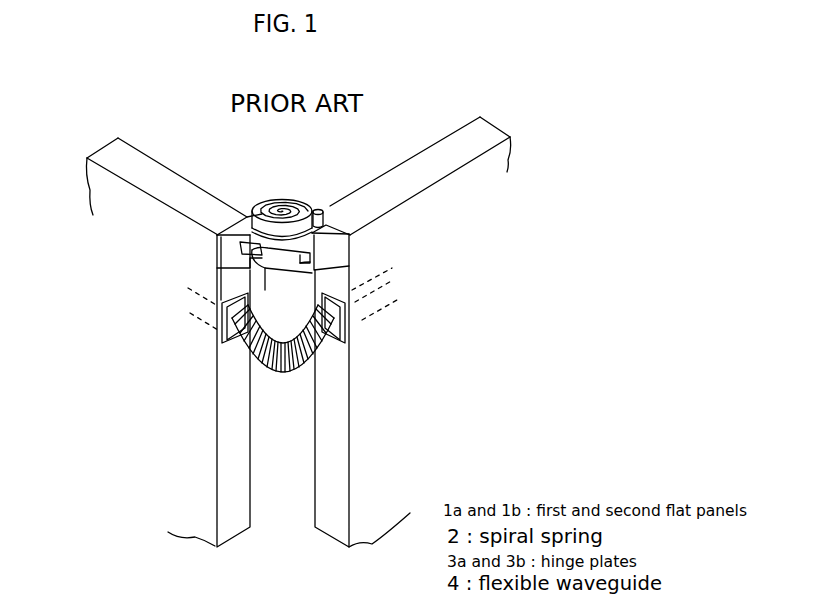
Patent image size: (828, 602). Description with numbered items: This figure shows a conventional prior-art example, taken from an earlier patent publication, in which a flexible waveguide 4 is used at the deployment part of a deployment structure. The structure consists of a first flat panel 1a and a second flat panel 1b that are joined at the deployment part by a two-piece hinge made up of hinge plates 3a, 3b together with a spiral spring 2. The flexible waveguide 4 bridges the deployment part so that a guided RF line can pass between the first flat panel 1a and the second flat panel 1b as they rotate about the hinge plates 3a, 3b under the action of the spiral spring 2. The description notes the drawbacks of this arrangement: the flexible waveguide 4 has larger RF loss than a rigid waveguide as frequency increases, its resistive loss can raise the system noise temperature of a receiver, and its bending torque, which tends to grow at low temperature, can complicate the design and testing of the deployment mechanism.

The first flat panel 1a is at (194, 526).
The second flat panel 1b is at (372, 517).
The spiral spring 2 is at (283, 198).
The hinge plate 3a is at (242, 228).
The hinge plate 3b is at (328, 216).
The flexible waveguide 4 is at (283, 372).